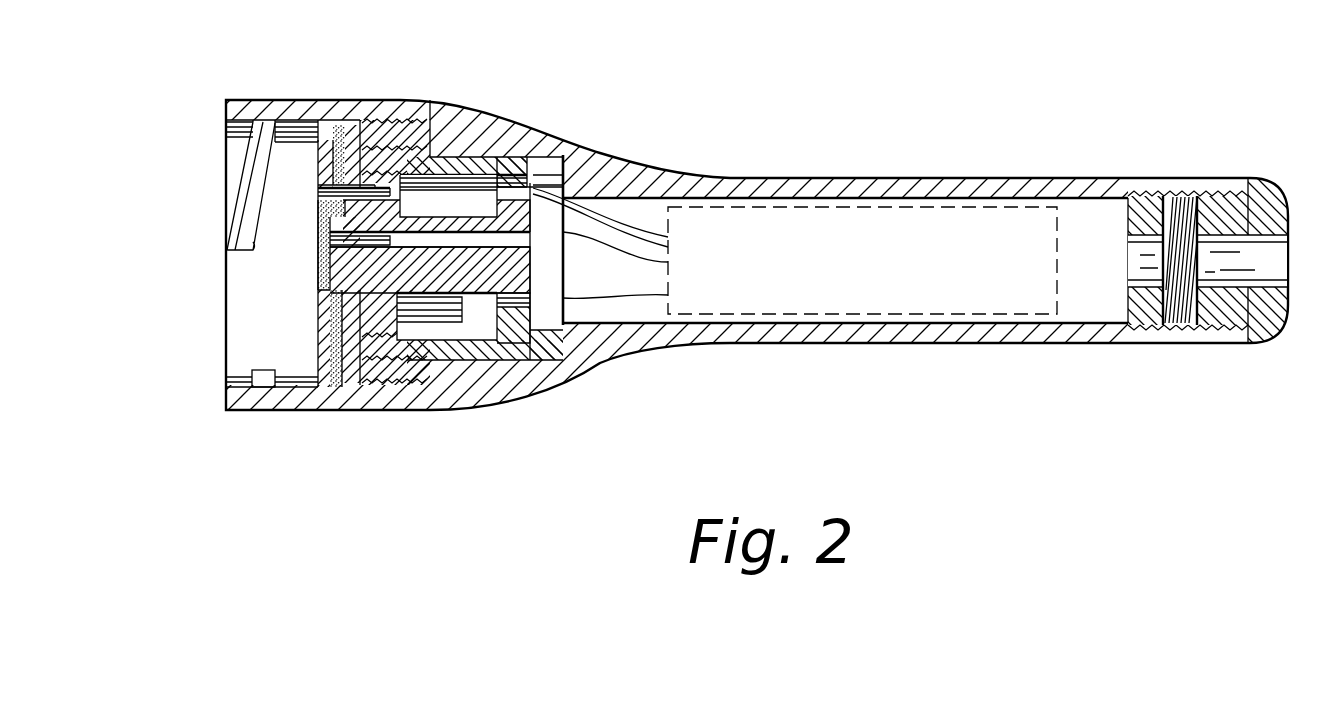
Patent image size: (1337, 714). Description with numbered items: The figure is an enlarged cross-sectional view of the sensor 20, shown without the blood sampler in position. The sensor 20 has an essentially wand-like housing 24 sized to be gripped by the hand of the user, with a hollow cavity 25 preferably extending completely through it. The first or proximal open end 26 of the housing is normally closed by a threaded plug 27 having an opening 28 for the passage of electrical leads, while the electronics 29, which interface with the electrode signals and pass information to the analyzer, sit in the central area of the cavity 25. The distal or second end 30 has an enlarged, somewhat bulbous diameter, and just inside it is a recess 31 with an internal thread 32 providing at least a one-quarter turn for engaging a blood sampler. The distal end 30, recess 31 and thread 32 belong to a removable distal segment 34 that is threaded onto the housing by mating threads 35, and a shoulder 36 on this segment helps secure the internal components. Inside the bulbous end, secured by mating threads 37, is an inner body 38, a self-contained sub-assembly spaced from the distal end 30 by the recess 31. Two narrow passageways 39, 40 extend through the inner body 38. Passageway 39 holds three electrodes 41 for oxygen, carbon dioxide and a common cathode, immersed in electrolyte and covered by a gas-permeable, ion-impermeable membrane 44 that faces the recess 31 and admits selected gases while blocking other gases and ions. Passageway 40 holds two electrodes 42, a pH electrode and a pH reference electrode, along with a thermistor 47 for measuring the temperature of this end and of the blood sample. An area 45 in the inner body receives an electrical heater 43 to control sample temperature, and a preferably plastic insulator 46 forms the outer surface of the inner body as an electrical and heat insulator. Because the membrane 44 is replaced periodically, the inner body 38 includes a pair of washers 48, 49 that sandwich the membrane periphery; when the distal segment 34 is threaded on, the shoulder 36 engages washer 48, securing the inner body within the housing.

The sensor 20 is at (1108, 154).
The housing 24 is at (782, 178).
The hollow cavity 25 is at (633, 225).
The first or proximal open end 26 is at (1240, 318).
The threaded plug 27 is at (1270, 186).
The opening 28 is at (1278, 262).
The electronics 29 is at (1003, 303).
The distal or second end 30 is at (228, 108).
The recess 31 is at (237, 322).
The internal thread 32 is at (257, 133).
The removable distal segment 34 is at (257, 410).
The mating threads 35 is at (373, 387).
The shoulder 36 is at (347, 140).
The mating threads 37 is at (390, 156).
The inner body 38 is at (520, 333).
The passageway 39 is at (578, 213).
The passageway 40 is at (505, 185).
The electrodes 41 is at (333, 247).
The electrodes 42 is at (327, 187).
The electrical heater 43 is at (452, 317).
The gas-permeable, ion-impermeable membrane 44 is at (320, 235).
The area 45 is at (433, 333).
The insulator 46 is at (537, 353).
The thermistor 47 is at (468, 113).
The washer 48 is at (342, 383).
The washer 49 is at (320, 338).